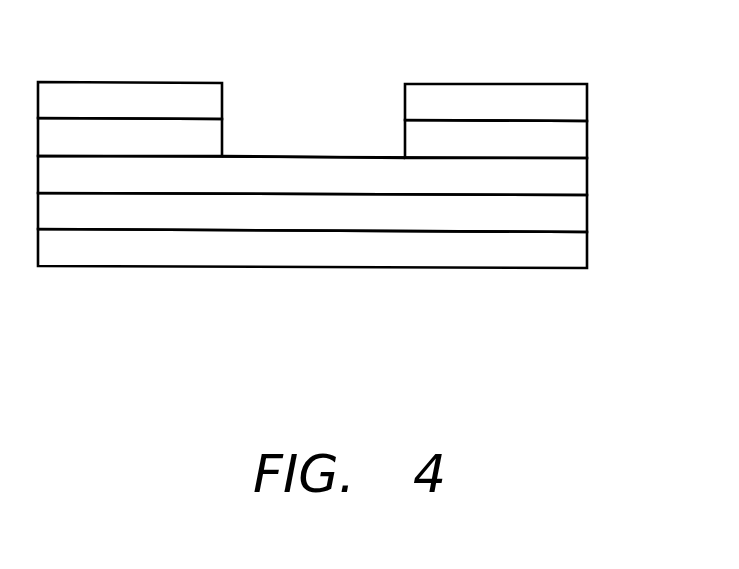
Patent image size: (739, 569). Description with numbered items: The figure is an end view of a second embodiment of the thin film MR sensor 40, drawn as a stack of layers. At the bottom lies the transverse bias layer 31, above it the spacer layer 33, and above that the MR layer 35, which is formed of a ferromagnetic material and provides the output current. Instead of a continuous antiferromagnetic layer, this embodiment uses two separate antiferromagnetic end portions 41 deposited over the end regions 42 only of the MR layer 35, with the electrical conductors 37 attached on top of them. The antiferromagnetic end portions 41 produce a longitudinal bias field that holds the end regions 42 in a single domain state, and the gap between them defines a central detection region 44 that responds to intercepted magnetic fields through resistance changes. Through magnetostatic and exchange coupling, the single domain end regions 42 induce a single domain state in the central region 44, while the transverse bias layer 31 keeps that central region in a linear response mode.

The transverse bias layer 31 is at (577, 258).
The spacer layer 33 is at (577, 218).
The MR layer 35 is at (577, 178).
The electrical conductors 37 is at (190, 95).
The layered structure 40 is at (345, 214).
The antiferromagnetic layer end portions 41 is at (207, 142).
The end regions 42 is at (345, 88).
The central detection region 44 is at (328, 93).